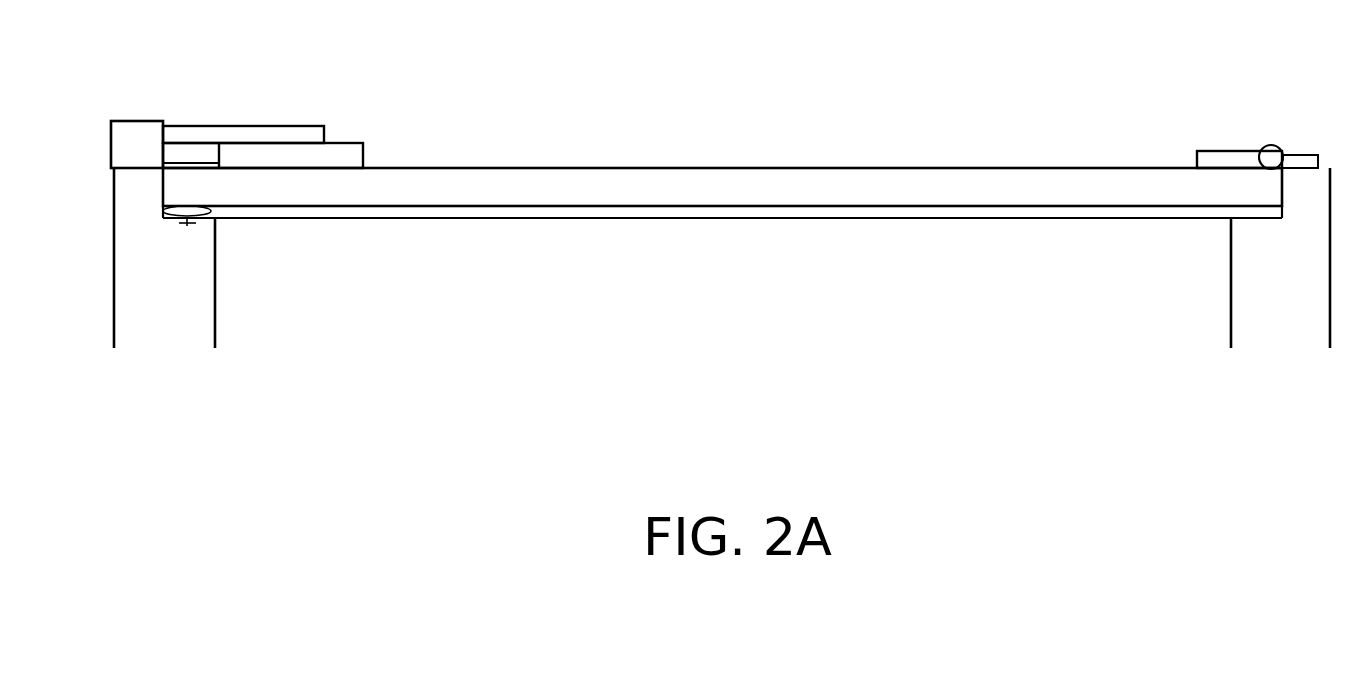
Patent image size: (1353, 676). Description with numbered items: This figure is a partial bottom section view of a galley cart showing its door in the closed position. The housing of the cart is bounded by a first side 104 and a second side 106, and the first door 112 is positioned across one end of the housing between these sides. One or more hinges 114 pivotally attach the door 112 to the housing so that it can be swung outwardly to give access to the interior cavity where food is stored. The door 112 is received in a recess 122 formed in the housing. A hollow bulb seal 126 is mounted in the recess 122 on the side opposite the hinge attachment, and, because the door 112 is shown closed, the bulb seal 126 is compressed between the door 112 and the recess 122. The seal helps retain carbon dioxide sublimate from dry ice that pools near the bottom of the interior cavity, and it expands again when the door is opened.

The first side 104 is at (1274, 305).
The second side 106 is at (158, 333).
The first door 112 is at (588, 185).
The hinge 114 is at (1270, 145).
The recess 122 is at (167, 220).
The hollow bulb seal 126 is at (200, 213).